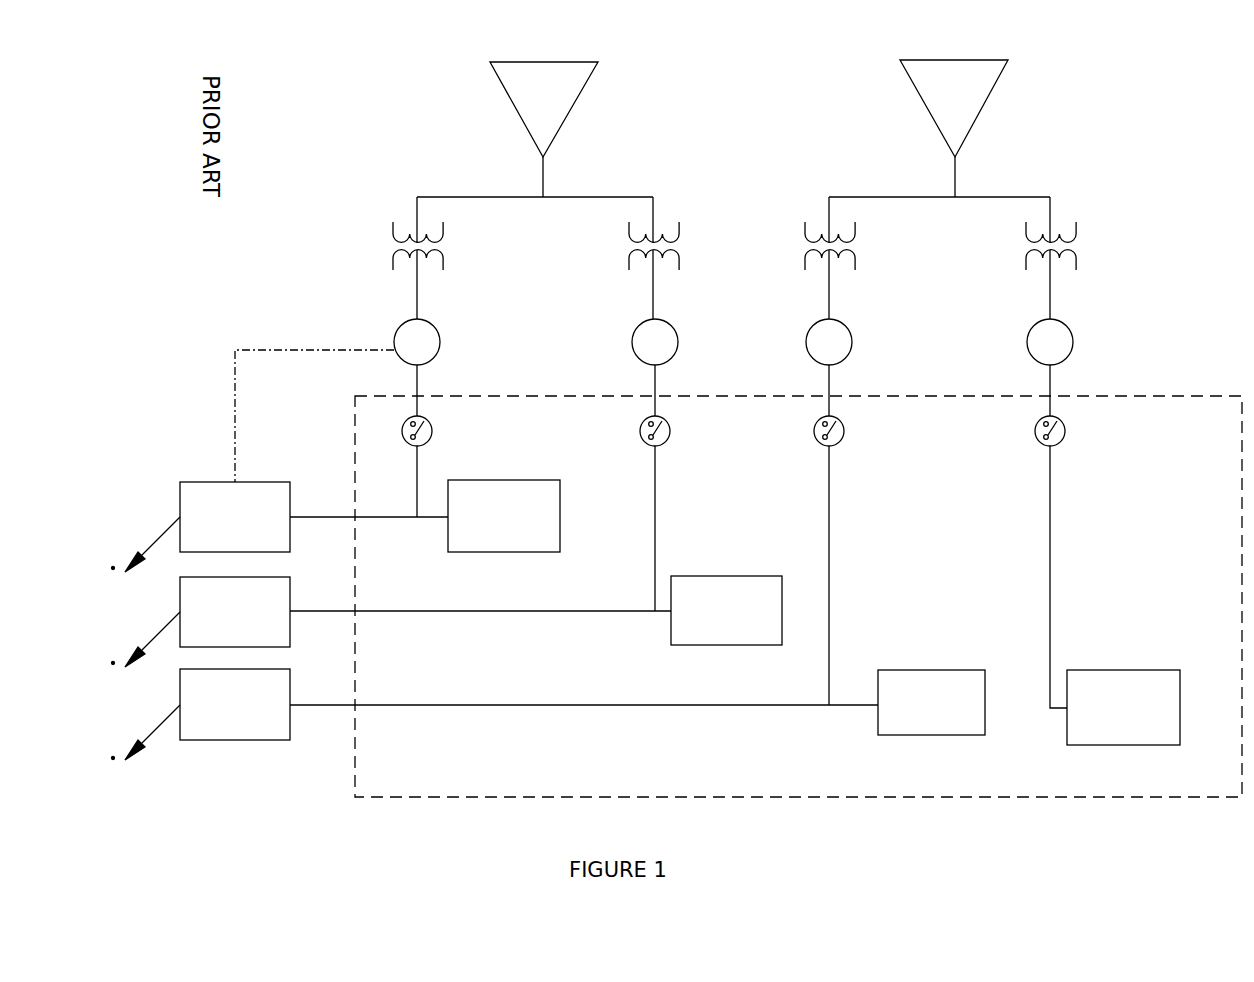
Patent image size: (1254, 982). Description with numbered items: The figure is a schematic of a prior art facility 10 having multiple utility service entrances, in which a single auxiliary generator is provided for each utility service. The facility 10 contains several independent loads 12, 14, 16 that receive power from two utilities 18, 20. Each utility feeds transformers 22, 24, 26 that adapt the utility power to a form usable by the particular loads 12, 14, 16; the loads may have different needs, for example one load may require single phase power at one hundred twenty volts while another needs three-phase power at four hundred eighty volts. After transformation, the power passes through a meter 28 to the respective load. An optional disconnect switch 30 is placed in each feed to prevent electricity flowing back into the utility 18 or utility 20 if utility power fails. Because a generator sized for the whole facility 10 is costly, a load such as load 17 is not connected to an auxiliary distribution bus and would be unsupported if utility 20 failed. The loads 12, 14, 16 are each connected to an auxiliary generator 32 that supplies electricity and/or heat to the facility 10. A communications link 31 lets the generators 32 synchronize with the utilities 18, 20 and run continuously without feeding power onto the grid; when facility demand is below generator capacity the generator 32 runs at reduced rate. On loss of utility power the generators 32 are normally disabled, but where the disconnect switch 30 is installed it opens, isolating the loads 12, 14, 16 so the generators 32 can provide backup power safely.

The facility 10 is at (875, 798).
The load 12 is at (503, 480).
The load 14 is at (752, 576).
The load 16 is at (962, 670).
The load 17 is at (1087, 670).
The utility 18 is at (561, 130).
The utility 20 is at (968, 130).
The transformer 22 is at (443, 270).
The transformer 24 is at (680, 260).
The transformer 26 is at (855, 265).
The meter 28 is at (440, 340).
The disconnect switch 30 is at (432, 436).
The communications link 31 is at (318, 350).
The auxiliary generator 32 is at (190, 482).